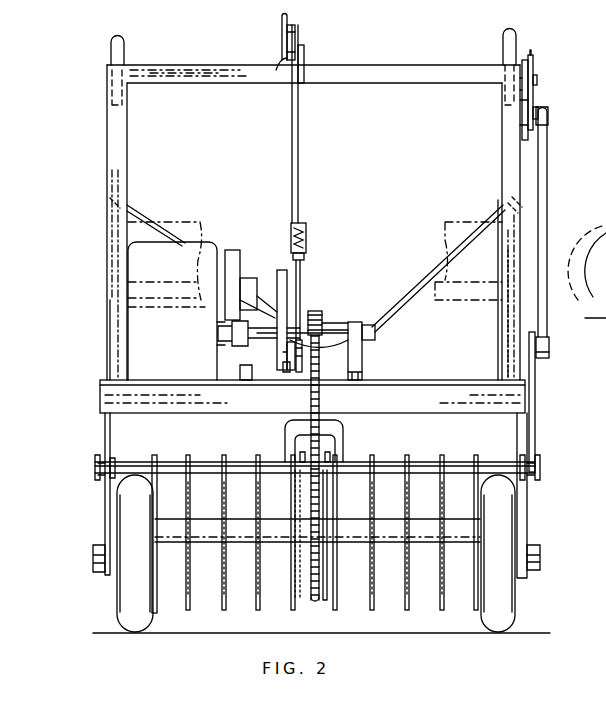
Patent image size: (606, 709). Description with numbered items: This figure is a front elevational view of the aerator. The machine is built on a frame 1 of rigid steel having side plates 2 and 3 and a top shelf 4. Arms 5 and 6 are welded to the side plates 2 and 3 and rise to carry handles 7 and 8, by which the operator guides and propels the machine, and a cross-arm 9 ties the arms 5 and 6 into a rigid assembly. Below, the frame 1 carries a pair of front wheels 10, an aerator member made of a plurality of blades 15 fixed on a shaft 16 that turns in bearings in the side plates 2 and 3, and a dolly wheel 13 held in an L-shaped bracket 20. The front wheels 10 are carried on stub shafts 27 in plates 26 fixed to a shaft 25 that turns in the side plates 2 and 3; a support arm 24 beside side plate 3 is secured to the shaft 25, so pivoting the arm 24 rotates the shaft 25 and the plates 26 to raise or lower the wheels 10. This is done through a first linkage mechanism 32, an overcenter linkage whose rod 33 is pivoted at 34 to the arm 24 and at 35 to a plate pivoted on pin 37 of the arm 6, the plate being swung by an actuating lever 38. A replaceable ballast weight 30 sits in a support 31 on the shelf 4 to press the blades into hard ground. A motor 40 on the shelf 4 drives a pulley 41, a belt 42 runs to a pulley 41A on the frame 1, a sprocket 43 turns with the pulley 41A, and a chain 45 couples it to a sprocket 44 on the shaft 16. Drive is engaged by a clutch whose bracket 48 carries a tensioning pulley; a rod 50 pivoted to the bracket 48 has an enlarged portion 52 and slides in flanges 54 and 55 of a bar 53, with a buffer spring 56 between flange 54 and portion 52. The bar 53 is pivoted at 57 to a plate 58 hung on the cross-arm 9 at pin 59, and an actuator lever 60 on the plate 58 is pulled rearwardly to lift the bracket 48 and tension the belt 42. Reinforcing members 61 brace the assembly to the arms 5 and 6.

The frame 1 is at (402, 374).
The side plate 2 is at (106, 518).
The side plate 3 is at (528, 510).
The top shelf 4 is at (440, 383).
The arm 5 is at (112, 173).
The arm 6 is at (500, 154).
The handle 7 is at (124, 48).
The handle 8 is at (506, 46).
The cross-arm 9 is at (425, 66).
The front wheel 10 is at (132, 585).
The dolly wheel 13 is at (323, 608).
The blade 15 is at (258, 452).
The shaft 16 is at (385, 527).
The L-shaped bracket 20 is at (343, 438).
The support arm 24 is at (536, 422).
The shaft 25 is at (421, 470).
The plate 26 is at (121, 473).
The stub shaft 27 is at (100, 550).
The ballast or weight 30 is at (178, 232).
The support 31 is at (129, 351).
The first linkage mechanism 32 is at (561, 153).
The rod 33 is at (548, 178).
The pivot 34 is at (538, 355).
The pivot 35 is at (537, 110).
The pin 37 is at (525, 60).
The actuating lever 38 is at (538, 66).
The motor 40 is at (200, 336).
The pulley 41 is at (277, 272).
The pulley 41A is at (283, 352).
The belt 42 is at (281, 370).
The sprocket 43 is at (321, 318).
The sprocket 44 is at (311, 562).
The chain 45 is at (296, 436).
The bracket 48 is at (299, 372).
The rod 50 is at (301, 280).
The enlarged portion 52 is at (306, 222).
The bar 53 is at (299, 166).
The flange 54 is at (306, 259).
The flange 55 is at (291, 226).
The buffer spring 56 is at (307, 240).
The pivot 57 is at (287, 40).
The plate 58 is at (290, 63).
The pin 59 is at (306, 52).
The actuator lever 60 is at (282, 24).
The reinforcing member 61 is at (139, 221).